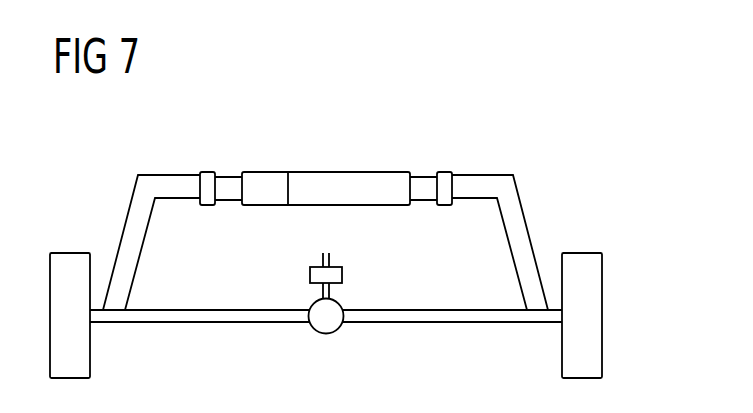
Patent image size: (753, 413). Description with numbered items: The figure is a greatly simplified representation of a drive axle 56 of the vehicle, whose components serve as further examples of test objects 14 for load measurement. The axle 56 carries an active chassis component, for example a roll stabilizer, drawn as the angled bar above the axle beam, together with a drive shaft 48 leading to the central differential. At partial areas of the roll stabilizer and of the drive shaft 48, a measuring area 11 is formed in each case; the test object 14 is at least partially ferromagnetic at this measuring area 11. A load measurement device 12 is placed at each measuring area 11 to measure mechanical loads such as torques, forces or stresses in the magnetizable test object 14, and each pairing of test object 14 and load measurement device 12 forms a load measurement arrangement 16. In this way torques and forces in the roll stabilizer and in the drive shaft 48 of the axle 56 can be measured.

The measurement area 11 is at (326, 152).
The test object 14 is at (207, 172).
The load measurement device 12 is at (326, 199).
The load measurement arrangement 16 is at (190, 166).
The drive shaft 48 is at (331, 262).
The axle 56 is at (607, 200).